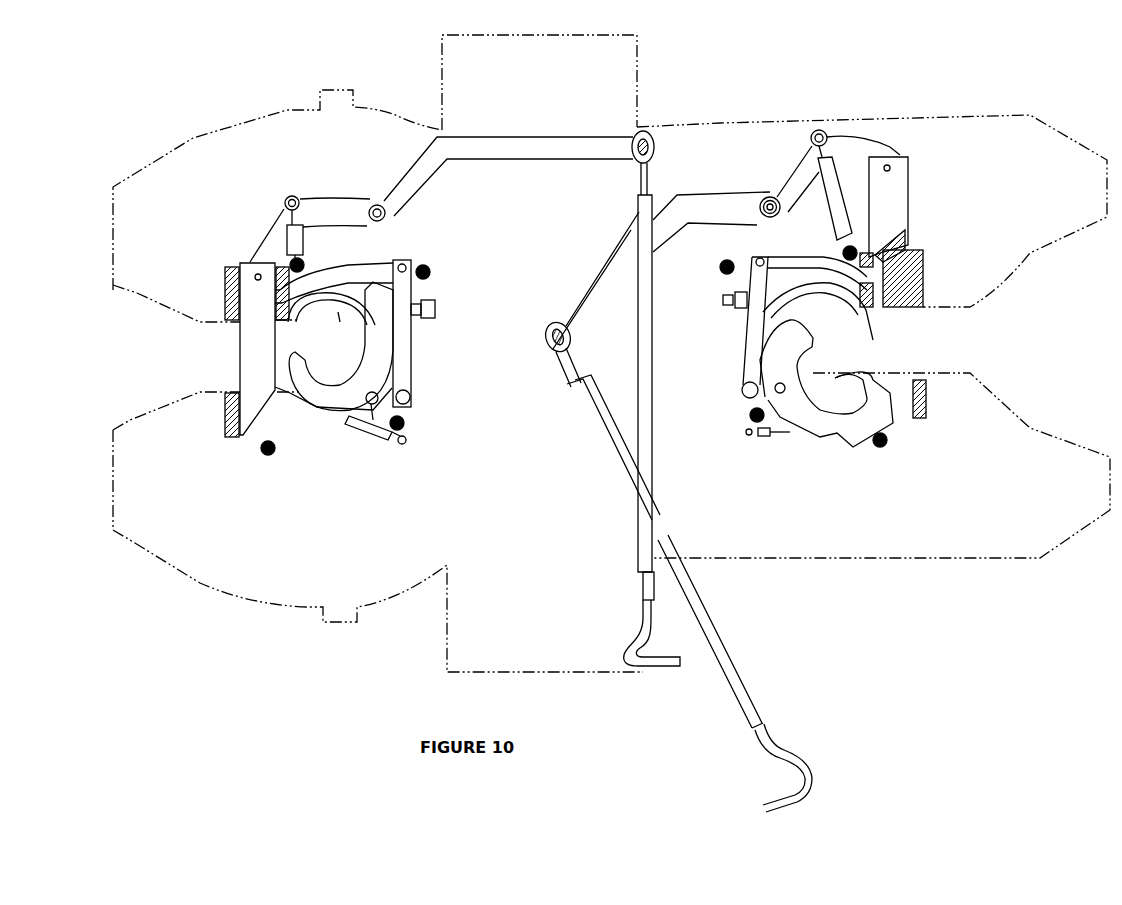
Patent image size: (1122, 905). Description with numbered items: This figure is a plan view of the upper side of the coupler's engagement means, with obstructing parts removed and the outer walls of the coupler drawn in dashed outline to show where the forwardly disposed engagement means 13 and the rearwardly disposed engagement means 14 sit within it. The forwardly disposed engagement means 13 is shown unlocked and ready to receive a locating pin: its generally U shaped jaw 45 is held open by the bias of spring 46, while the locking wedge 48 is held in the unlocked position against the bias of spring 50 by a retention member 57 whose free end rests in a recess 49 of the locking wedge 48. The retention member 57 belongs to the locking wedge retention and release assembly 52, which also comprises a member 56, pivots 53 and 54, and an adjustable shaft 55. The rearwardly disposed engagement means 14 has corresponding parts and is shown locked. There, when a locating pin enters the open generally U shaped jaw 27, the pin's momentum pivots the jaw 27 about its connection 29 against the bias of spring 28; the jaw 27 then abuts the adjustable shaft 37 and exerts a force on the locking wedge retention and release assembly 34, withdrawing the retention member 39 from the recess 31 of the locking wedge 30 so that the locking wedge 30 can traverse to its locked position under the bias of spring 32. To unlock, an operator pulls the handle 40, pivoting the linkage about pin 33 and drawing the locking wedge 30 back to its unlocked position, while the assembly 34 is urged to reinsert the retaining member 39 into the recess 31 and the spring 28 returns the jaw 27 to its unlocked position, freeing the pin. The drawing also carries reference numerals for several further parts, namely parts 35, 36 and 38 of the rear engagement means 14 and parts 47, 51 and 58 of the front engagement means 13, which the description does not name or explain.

The forwardly disposed engagement means 13 is at (975, 330).
The rearwardly disposed engagement means 14 is at (190, 245).
The generally U shaped jaw 27 is at (388, 316).
The spring 28 is at (378, 445).
The connection 29 is at (368, 407).
The locking wedge 30 is at (247, 418).
The recess 31 is at (258, 382).
The spring 32 is at (282, 233).
The pin 33 is at (375, 206).
The locking wedge retention and release assembly 34 is at (418, 256).
The bolt 35 is at (418, 277).
The roller 36 is at (413, 411).
The adjustable shaft 37 is at (442, 320).
The lever 38 is at (412, 375).
The retention member 39 is at (347, 262).
The handle 40 is at (645, 552).
The generally U shaped jaw 45 is at (823, 432).
The spring 46 is at (762, 440).
The pivot 47 is at (770, 397).
The locking wedge 48 is at (905, 205).
The recess 49 is at (903, 243).
The spring 50 is at (845, 165).
The bushing 51 is at (771, 195).
The locking wedge retention and release assembly 52 is at (740, 258).
The pivot 53 is at (757, 240).
The pivot 54 is at (741, 390).
The adjustable shaft 55 is at (720, 298).
The member 56 is at (747, 362).
The retention member 57 is at (813, 233).
The actuating rod 58 is at (762, 713).